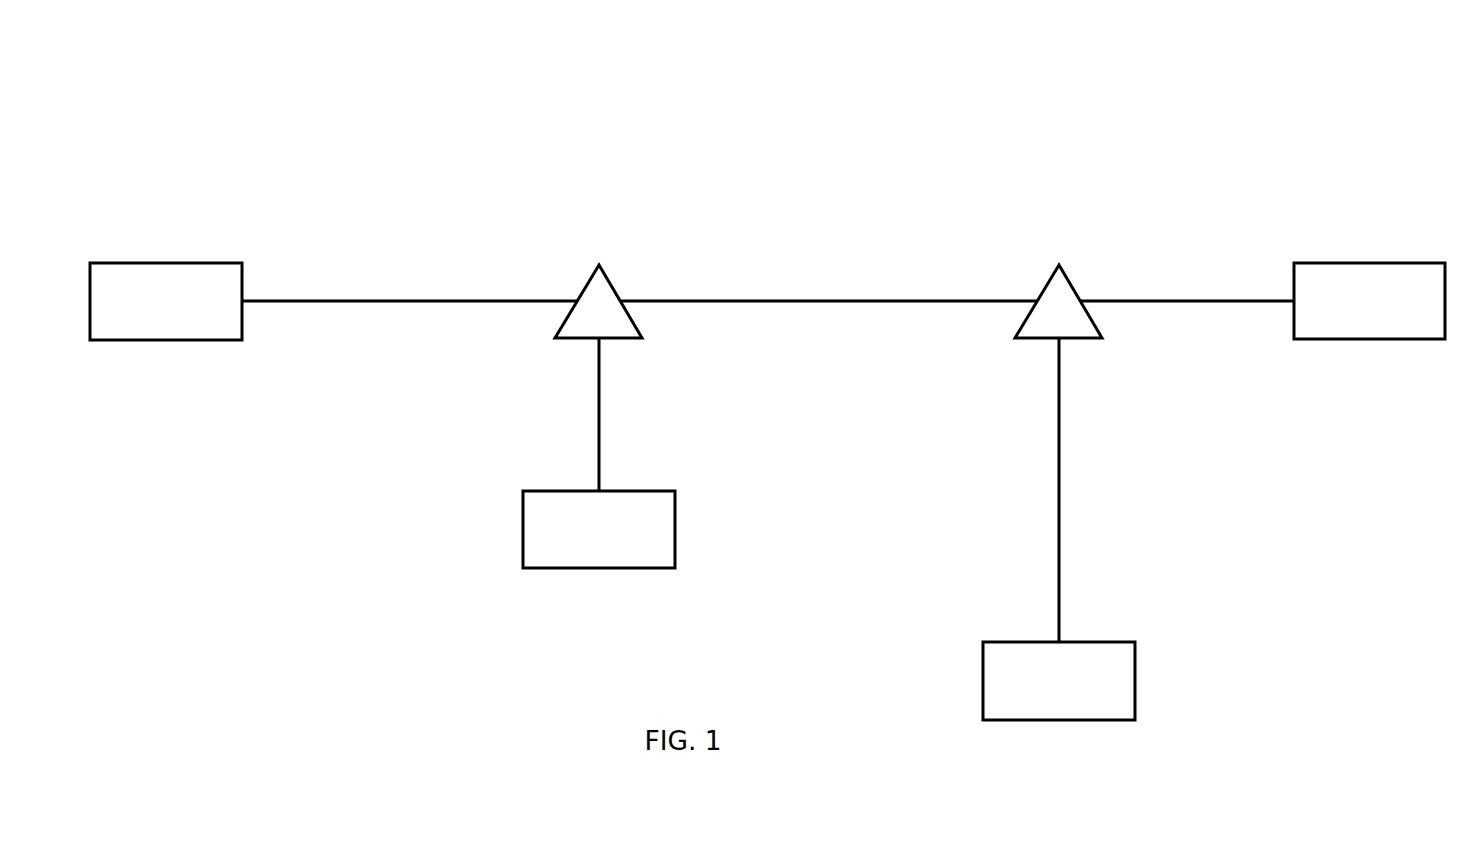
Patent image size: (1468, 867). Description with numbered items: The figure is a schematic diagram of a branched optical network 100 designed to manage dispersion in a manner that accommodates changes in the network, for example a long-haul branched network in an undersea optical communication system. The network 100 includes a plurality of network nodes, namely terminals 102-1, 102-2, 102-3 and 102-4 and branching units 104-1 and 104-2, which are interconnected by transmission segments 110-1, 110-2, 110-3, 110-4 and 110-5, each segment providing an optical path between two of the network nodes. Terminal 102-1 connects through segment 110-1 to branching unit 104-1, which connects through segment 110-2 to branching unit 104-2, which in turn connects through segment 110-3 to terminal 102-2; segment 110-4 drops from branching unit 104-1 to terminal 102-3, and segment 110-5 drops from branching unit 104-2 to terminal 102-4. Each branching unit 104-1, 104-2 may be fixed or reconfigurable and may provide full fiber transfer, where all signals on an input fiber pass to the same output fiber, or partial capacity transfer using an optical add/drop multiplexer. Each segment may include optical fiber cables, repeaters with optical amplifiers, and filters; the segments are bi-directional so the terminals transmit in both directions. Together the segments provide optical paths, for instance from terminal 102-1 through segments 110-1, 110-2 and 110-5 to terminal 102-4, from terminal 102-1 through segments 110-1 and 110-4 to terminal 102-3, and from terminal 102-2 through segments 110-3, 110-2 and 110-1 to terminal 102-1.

The branched optical network 100 is at (826, 142).
The terminal 102-1 is at (166, 301).
The terminal 102-2 is at (1369, 301).
The terminal 102-3 is at (599, 529).
The terminal 102-4 is at (1059, 681).
The branching unit 104-1 is at (599, 265).
The branching unit 104-2 is at (1059, 265).
The transmission segment 110-1 is at (335, 301).
The transmission segment 110-2 is at (795, 301).
The transmission segment 110-3 is at (1180, 301).
The transmission segment 110-4 is at (599, 417).
The transmission segment 110-5 is at (1059, 472).